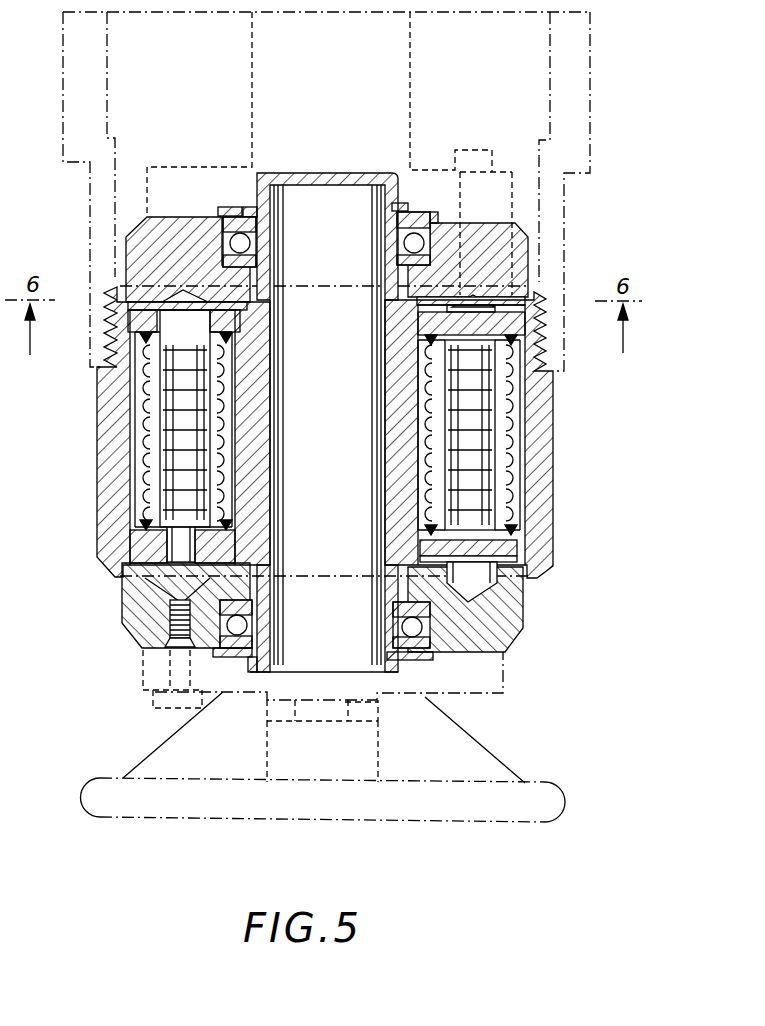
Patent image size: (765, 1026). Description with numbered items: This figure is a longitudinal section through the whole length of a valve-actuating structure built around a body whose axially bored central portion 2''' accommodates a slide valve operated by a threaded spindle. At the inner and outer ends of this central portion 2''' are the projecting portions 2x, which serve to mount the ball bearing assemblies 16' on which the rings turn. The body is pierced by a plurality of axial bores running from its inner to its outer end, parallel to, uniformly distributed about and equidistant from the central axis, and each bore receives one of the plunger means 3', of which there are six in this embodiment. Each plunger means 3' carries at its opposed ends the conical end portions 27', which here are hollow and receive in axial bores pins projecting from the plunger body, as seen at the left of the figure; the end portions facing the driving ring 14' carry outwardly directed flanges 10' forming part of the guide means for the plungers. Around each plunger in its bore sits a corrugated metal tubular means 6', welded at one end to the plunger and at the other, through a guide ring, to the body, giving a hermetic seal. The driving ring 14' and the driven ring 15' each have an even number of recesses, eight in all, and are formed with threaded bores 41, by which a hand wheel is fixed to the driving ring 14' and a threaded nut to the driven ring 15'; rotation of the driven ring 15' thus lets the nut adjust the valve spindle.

The projecting portions 2x is at (334, 440).
The axially bored central portion 2''' is at (329, 425).
The plunger means 3' is at (125, 436).
The corrugated metal tubular means 6' is at (155, 432).
The outwardly directed flanges 10' is at (135, 545).
The threaded bores 41 is at (172, 603).
The ball bearing assemblies 16' is at (264, 394).
The driven ring 15' is at (517, 255).
The conical end portions 27' is at (530, 434).
The driving ring 14' is at (521, 607).